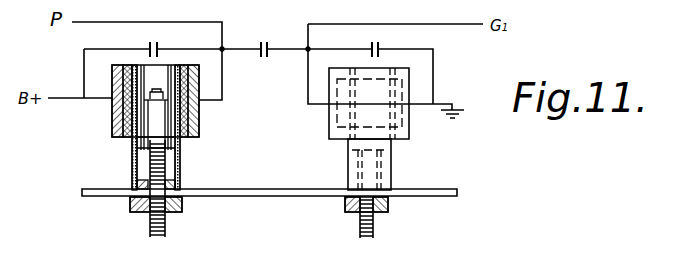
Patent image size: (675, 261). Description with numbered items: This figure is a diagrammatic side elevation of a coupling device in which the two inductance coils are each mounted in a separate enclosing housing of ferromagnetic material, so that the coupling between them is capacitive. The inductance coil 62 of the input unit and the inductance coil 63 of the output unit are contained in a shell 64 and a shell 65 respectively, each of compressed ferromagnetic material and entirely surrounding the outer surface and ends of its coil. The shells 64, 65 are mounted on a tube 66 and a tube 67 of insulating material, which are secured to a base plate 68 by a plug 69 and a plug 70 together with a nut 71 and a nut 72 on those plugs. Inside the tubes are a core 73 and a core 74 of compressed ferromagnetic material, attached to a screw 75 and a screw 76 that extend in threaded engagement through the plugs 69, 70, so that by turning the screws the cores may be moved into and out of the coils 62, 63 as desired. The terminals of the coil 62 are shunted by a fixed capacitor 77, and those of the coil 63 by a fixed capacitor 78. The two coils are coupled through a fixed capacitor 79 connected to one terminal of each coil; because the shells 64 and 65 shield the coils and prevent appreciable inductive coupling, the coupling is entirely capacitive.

The inductance coil 62 is at (113, 120).
The inductance coil 63 is at (398, 125).
The shell 64 is at (198, 122).
The shell 65 is at (329, 118).
The tube 66 is at (181, 172).
The tube 67 is at (386, 176).
The base plate 68 is at (455, 200).
The plug 69 is at (143, 212).
The plug 70 is at (357, 212).
The nut 71 is at (130, 200).
The nut 72 is at (347, 205).
The core 73 is at (147, 142).
The core 74 is at (360, 145).
The screw 75 is at (165, 230).
The screw 76 is at (375, 228).
The fixed capacitor 77 is at (153, 42).
The fixed capacitor 78 is at (359, 43).
The fixed capacitor 79 is at (265, 36).